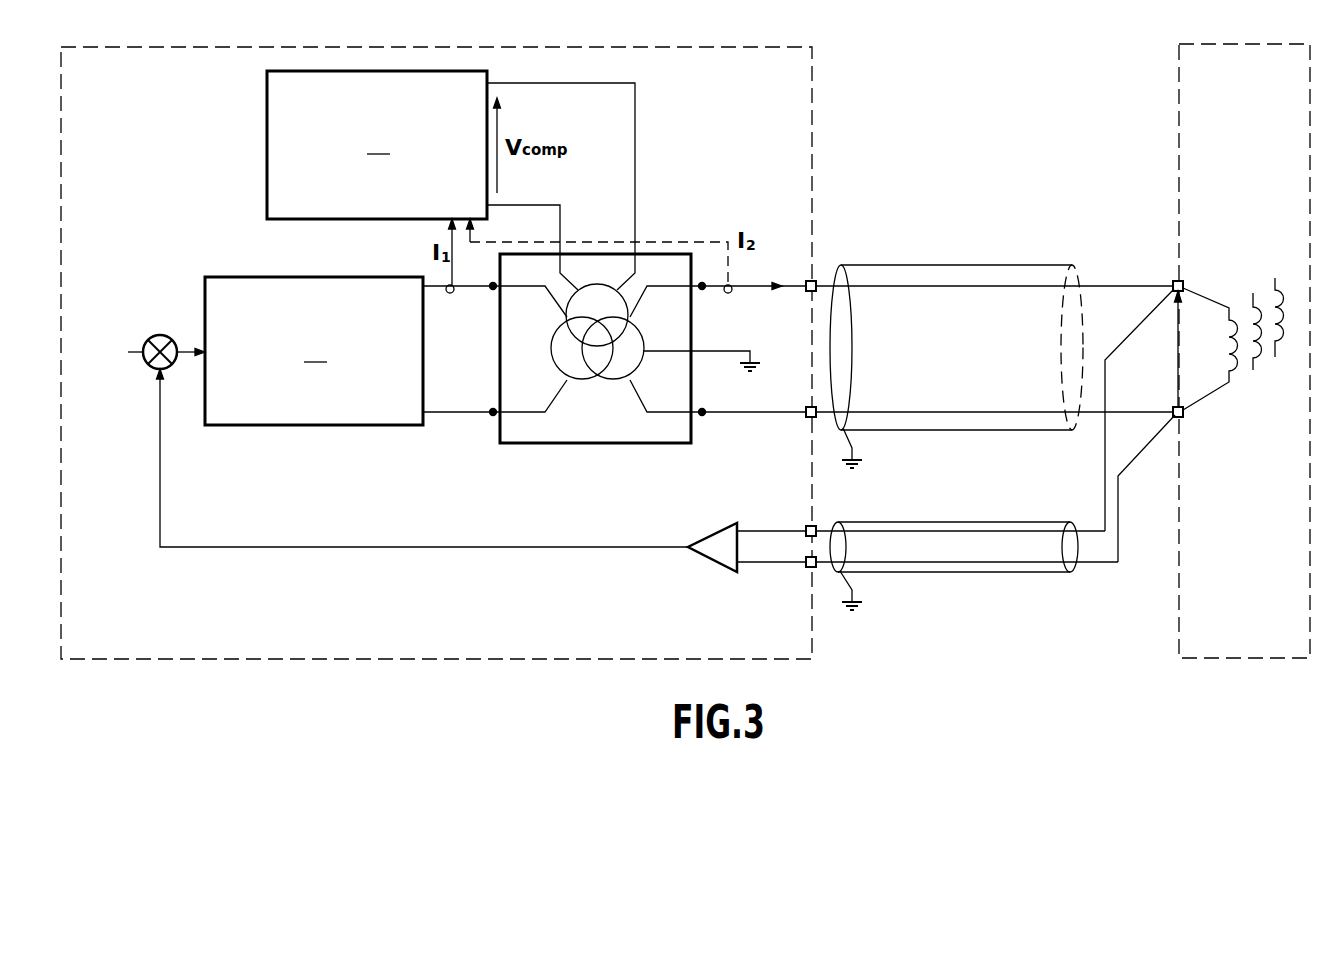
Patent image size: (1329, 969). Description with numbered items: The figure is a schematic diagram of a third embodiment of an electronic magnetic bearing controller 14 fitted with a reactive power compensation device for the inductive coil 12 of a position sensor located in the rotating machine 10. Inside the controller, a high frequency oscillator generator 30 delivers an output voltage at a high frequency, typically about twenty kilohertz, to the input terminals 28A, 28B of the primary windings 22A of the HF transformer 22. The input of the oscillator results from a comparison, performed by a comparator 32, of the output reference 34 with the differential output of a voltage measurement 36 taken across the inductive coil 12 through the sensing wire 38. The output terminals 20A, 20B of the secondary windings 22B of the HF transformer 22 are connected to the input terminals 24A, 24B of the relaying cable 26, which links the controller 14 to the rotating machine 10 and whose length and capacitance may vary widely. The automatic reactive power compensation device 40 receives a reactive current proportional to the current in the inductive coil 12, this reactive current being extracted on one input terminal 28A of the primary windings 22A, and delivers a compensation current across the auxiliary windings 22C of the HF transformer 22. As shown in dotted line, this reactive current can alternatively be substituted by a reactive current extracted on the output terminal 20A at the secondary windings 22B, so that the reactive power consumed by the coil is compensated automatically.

The rotating machine 10 is at (1232, 44).
The inductive coil 12 is at (1226, 345).
The electronic magnetic bearing controller 14 is at (640, 47).
The output terminal 20A is at (702, 290).
The output terminal 20B is at (702, 416).
The HF transformer 22 is at (595, 348).
The primary windings 22A is at (550, 350).
The secondary windings 22B is at (603, 381).
The auxiliary windings 22C is at (600, 284).
The input terminal 24A is at (806, 290).
The input terminal 24B is at (806, 416).
The relaying cable 26 is at (954, 265).
The input terminal 28A is at (491, 290).
The input terminal 28B is at (491, 415).
The high frequency oscillator generator 30 is at (314, 351).
The comparator 32 is at (160, 335).
The output reference 34 is at (119, 352).
The voltage measurement 36 is at (710, 532).
The sensing wire 38 is at (954, 522).
The automatic reactive power compensation device 40 is at (377, 145).